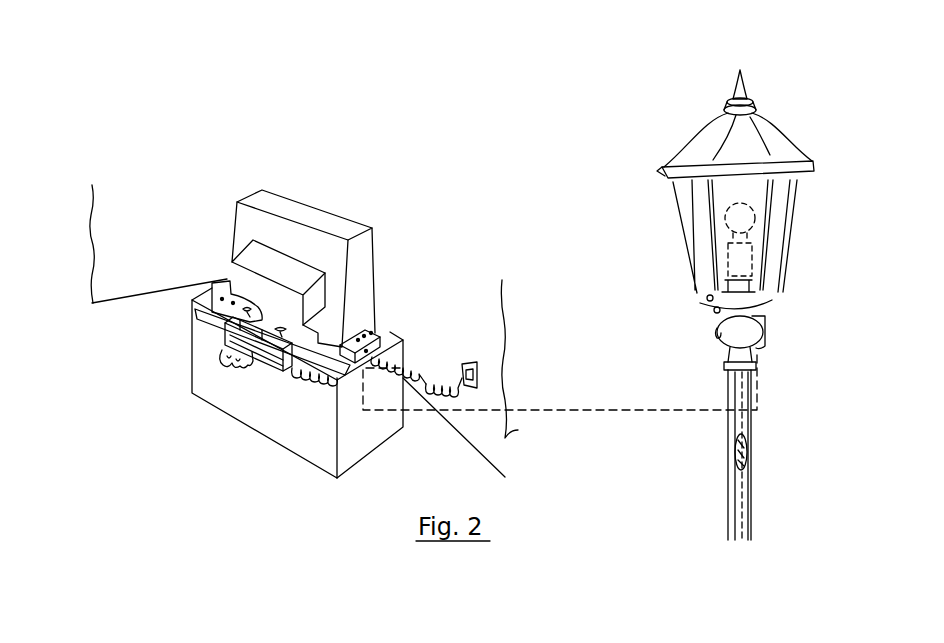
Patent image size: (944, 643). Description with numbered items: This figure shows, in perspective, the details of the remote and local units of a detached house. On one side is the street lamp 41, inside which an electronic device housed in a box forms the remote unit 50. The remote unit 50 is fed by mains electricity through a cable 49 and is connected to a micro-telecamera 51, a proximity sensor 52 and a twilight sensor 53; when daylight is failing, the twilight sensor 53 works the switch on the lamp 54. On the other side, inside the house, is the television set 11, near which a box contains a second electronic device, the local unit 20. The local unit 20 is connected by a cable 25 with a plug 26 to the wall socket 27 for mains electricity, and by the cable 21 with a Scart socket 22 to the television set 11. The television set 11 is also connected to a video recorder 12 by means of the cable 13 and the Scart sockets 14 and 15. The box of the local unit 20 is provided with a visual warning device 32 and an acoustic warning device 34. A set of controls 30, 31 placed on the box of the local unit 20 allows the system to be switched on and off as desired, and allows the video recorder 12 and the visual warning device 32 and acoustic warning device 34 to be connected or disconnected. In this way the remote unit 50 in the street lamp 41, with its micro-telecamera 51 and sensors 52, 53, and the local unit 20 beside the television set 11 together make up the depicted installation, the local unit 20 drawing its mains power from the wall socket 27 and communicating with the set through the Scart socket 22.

The television set 11 is at (346, 219).
The video recorder 12 is at (262, 308).
The cable 13 is at (228, 370).
The Scart socket 14 is at (228, 284).
The Scart socket 15 is at (268, 373).
The local unit 20 is at (404, 289).
The cable 21 is at (307, 390).
The Scart socket 22 is at (287, 330).
The cable 25 is at (452, 397).
The plug 26 is at (476, 380).
The wall socket 27 is at (470, 366).
The control 30 is at (355, 340).
The control 31 is at (375, 325).
The visual warning device 32 is at (347, 360).
The acoustic warning device 34 is at (362, 337).
The street lamp 41 is at (750, 186).
The cable 49 is at (737, 450).
The remote unit 50 is at (768, 338).
The micro-telecamera 51 is at (717, 333).
The proximity sensor 52 is at (773, 302).
The twilight sensor 53 is at (700, 307).
The switch on the lamp 54 is at (772, 246).